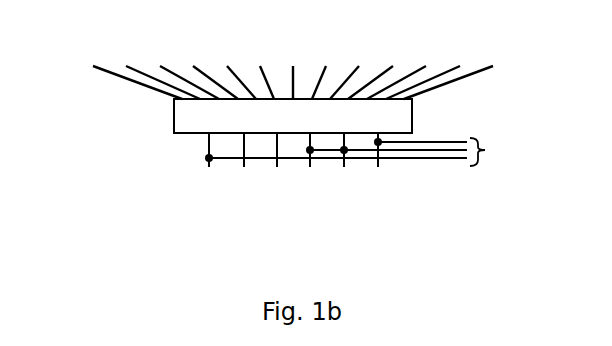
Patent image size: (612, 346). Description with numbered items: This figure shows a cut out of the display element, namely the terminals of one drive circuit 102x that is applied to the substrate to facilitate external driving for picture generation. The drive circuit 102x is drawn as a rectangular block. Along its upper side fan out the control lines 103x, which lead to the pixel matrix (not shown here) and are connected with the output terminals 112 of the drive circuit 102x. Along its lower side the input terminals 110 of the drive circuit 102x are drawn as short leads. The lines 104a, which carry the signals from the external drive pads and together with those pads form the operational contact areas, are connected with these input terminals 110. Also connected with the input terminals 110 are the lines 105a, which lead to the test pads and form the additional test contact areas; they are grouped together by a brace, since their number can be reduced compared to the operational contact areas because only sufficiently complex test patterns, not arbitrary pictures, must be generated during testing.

The drive circuit 102x is at (173, 120).
The control lines 103x is at (100, 72).
The output terminals 112 is at (277, 98).
The lines 104a is at (207, 152).
The input terminals 110 is at (275, 134).
The lines 105a is at (488, 150).